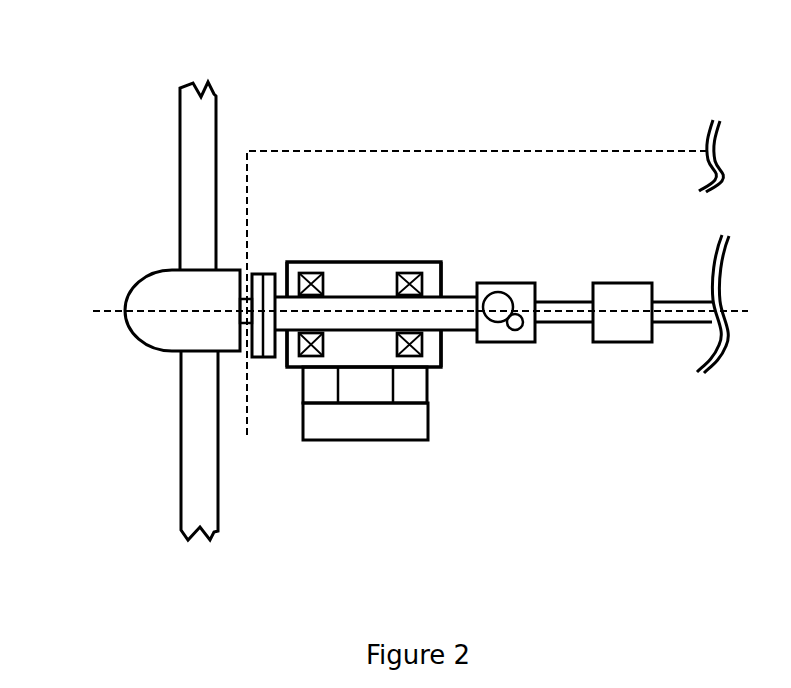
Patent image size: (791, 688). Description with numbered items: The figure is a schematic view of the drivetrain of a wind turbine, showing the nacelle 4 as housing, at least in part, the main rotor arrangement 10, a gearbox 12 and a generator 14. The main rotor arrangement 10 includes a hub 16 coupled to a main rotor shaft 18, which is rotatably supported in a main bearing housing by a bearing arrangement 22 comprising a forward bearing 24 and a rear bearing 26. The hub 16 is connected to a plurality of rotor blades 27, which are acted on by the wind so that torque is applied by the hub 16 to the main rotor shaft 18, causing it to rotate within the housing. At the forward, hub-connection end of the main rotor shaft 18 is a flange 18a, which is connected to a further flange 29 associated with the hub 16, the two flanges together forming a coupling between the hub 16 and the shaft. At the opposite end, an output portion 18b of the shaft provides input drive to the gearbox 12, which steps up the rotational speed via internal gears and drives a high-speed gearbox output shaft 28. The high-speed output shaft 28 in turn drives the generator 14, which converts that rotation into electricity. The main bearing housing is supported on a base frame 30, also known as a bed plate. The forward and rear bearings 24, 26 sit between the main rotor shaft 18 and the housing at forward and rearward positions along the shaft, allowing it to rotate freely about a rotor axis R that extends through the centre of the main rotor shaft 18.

The main rotor arrangement 10 is at (122, 96).
The nacelle 4 is at (500, 150).
The rotor blades 27 is at (192, 203).
The hub 16 is at (175, 322).
The rotor axis R is at (108, 312).
The further flange 29 is at (255, 358).
The bearing arrangement 22 is at (453, 378).
The main rotor shaft 18 is at (360, 295).
The flange 18a is at (275, 272).
The output portion 18b is at (463, 293).
The forward bearing 24 is at (315, 277).
The rear bearing 26 is at (417, 277).
The base frame 30 is at (378, 440).
The gearbox 12 is at (495, 342).
The high-speed gearbox output shaft 28 is at (555, 300).
The generator 14 is at (622, 342).